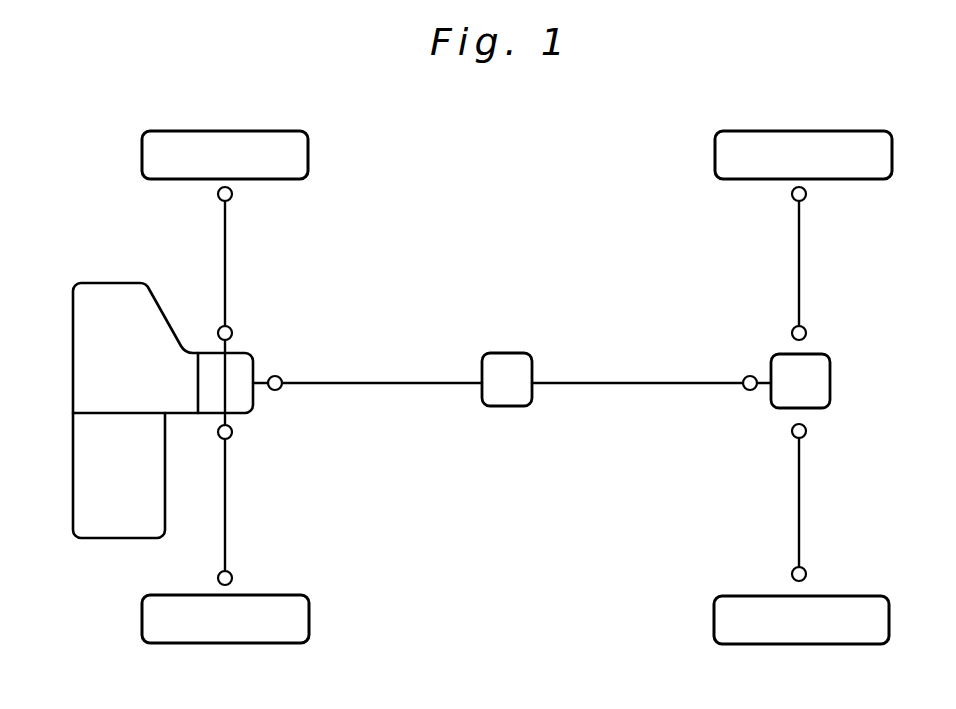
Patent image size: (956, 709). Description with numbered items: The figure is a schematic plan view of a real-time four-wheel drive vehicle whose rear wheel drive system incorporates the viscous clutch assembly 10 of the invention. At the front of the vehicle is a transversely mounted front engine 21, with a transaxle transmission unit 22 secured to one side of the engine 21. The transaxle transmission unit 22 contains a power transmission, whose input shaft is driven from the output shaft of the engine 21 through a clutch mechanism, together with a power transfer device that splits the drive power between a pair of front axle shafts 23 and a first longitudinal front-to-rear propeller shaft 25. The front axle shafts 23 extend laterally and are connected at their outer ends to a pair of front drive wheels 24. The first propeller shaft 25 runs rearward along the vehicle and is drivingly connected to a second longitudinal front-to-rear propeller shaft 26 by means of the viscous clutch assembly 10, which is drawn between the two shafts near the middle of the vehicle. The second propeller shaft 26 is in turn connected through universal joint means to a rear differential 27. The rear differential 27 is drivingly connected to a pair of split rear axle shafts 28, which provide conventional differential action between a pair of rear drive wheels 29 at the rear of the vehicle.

The viscous clutch assembly 10 is at (507, 364).
The front engine 21 is at (118, 530).
The transaxle transmission unit 22 is at (86, 384).
The front axle shafts 23 is at (226, 257).
The front drive wheels 24 is at (275, 145).
The first longitudinal front-to-rear propeller shaft 25 is at (370, 379).
The second longitudinal front-to-rear propeller shaft 26 is at (642, 386).
The rear differential 27 is at (818, 370).
The split rear axle shafts 28 is at (800, 257).
The rear drive wheels 29 is at (851, 145).